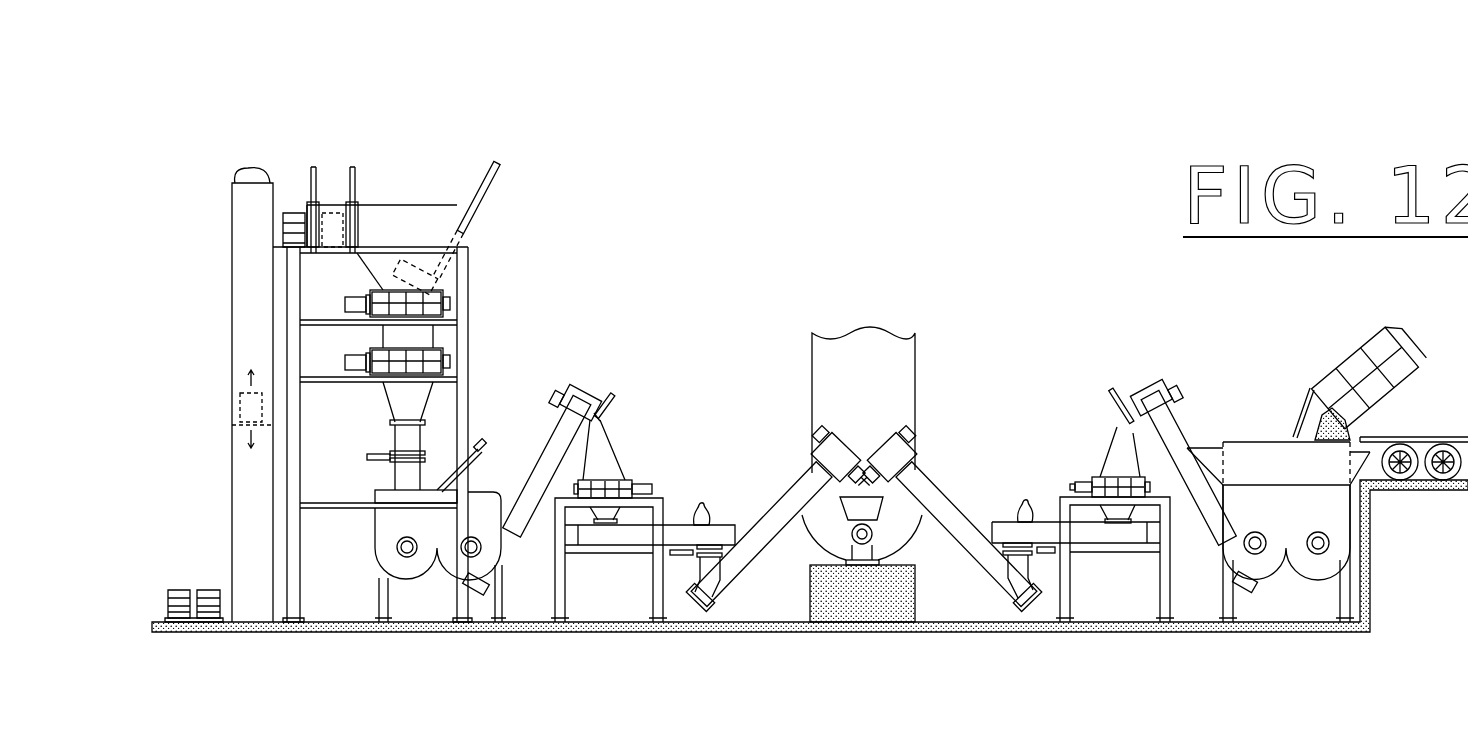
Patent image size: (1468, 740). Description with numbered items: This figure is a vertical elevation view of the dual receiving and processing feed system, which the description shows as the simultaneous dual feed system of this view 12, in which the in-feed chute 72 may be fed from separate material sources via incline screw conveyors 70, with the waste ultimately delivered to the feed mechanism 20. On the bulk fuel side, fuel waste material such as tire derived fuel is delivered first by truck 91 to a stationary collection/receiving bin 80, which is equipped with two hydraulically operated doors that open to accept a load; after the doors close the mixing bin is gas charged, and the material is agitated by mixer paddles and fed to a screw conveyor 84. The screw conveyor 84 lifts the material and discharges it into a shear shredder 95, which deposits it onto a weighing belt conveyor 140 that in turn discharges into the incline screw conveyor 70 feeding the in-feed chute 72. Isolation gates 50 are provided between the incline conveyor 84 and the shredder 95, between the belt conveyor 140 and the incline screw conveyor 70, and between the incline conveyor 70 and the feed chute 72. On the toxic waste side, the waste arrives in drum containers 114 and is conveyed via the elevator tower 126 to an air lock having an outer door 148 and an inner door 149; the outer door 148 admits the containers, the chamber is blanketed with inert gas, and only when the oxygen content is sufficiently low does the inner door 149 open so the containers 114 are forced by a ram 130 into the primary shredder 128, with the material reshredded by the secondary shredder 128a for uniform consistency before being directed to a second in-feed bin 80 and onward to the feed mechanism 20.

The feed chute 12 is at (864, 328).
The screw feed mechanism 20 is at (886, 531).
The isolation gates 50 is at (365, 457).
The incline screw conveyor 70 is at (780, 505).
The in-feed chute 72 is at (852, 510).
The collection/receiving bin 80 is at (455, 544).
The screw conveyor 84 is at (530, 473).
The truck 91 is at (1323, 390).
The shear shredder 95 is at (640, 480).
The drum containers 114 is at (175, 590).
The elevator tower 126 is at (232, 353).
The primary shredder 128 is at (447, 302).
The secondary shredder 128a is at (447, 357).
The ram 130 is at (487, 190).
The weighing belt conveyor 140 is at (677, 525).
The outer door 148 is at (311, 190).
The inner door 149 is at (356, 190).